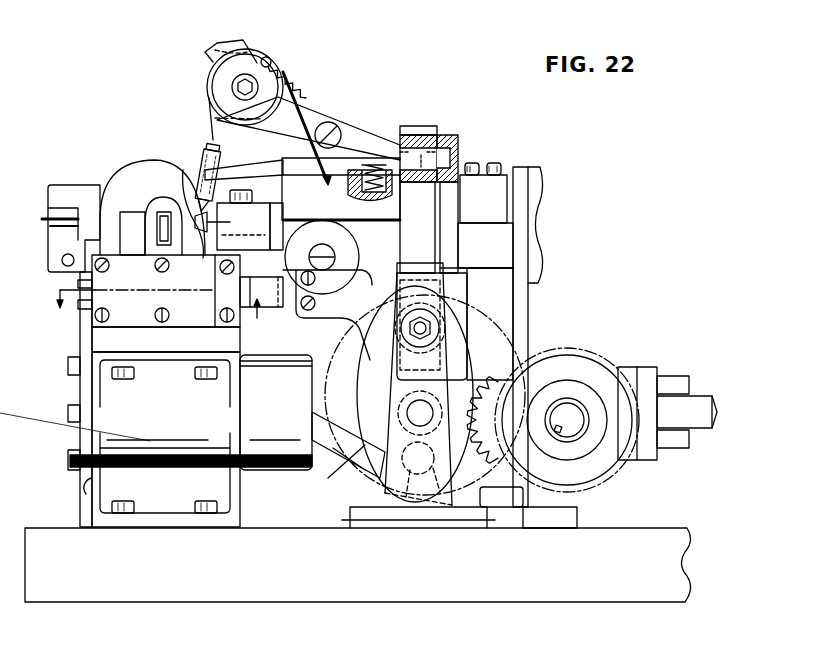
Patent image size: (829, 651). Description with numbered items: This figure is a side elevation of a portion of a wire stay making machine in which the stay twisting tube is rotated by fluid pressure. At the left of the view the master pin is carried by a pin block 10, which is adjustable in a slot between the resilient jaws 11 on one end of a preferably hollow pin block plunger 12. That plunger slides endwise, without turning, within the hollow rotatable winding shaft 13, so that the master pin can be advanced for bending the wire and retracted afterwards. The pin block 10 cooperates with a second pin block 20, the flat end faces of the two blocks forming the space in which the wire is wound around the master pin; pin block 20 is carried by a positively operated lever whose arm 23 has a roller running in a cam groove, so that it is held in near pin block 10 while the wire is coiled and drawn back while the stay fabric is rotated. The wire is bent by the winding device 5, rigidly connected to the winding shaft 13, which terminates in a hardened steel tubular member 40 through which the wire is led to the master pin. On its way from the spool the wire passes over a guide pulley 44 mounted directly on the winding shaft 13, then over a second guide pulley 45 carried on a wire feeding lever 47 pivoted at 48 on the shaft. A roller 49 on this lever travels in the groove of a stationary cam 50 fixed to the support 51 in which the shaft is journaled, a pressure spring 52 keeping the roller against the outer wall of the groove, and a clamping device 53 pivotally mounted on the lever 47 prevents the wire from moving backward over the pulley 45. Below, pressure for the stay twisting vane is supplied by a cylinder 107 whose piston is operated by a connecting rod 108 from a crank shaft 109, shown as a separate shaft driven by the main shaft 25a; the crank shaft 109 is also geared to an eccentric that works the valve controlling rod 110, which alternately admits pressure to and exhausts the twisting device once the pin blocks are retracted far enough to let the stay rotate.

The winding device 5 is at (223, 168).
The pin block 10 is at (214, 228).
The resilient jaws 11 is at (243, 240).
The pin block plunger 12 is at (275, 208).
The winding shaft 13 is at (360, 191).
The pin block 20 is at (187, 197).
The arm 23 is at (161, 318).
The main shaft 25a is at (577, 400).
The tubular member 40 is at (191, 174).
The guide pulley 44 is at (355, 253).
The guide pulley 45 is at (272, 62).
The wire feeding lever 47 is at (348, 129).
The pivot 48 is at (329, 122).
The roller 49 is at (437, 142).
The stationary cam 50 is at (458, 152).
The support 51 is at (490, 188).
The pressure spring 52 is at (373, 164).
The clamping device 53 is at (231, 58).
The cylinder 107 is at (255, 470).
The connecting rod 108 is at (362, 448).
The crank shaft 109 is at (427, 410).
The valve controlling rod 110 is at (297, 308).